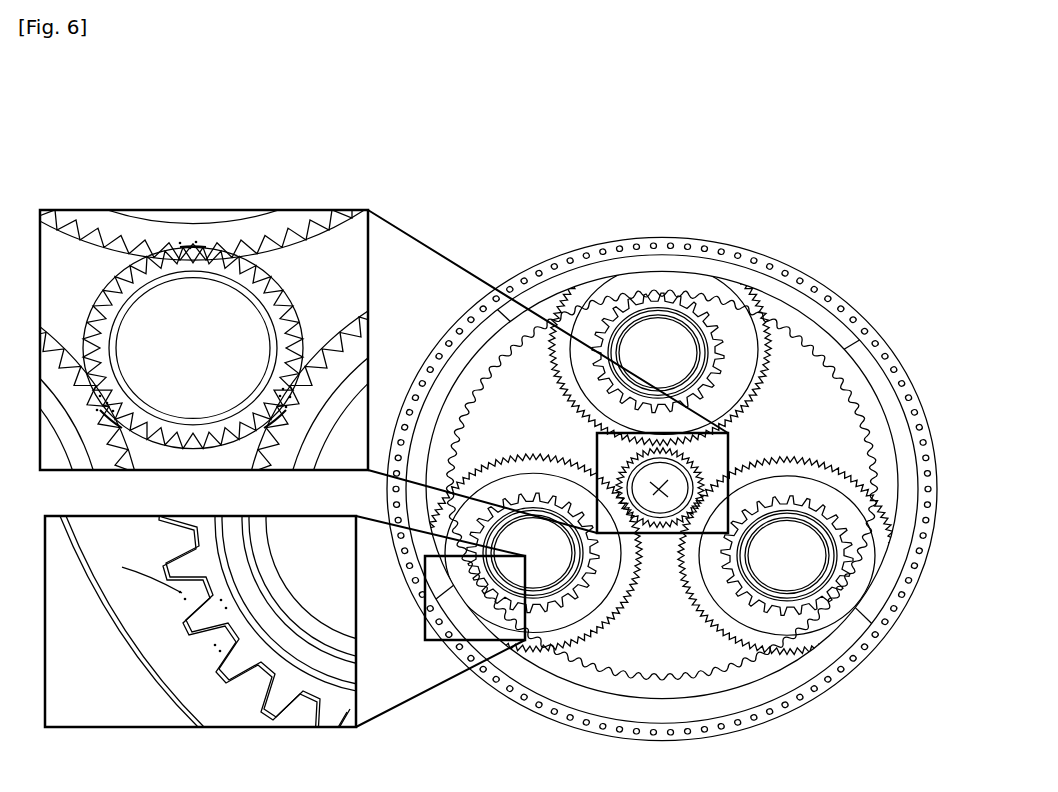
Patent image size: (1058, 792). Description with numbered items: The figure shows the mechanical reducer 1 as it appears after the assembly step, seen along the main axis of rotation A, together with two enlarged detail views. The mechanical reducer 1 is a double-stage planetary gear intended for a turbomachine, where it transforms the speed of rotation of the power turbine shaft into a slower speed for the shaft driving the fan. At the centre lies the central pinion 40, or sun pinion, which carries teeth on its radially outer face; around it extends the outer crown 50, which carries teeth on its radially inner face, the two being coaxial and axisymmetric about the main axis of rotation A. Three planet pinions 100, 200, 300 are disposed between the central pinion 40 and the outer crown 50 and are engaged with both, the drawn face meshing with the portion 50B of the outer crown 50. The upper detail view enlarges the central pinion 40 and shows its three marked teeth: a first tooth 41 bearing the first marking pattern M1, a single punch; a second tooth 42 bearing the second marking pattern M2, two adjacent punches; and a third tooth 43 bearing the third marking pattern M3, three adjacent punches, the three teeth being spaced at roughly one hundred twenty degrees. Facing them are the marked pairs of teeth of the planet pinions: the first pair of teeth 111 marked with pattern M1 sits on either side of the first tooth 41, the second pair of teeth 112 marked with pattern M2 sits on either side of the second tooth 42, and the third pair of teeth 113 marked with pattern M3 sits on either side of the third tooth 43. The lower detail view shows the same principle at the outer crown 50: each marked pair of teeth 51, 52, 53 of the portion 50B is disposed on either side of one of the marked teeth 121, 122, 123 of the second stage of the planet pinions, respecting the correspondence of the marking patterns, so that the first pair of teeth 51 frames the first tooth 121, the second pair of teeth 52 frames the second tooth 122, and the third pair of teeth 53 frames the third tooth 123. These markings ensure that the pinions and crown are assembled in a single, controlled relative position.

The mechanical reducer 1 is at (730, 152).
The central pinion 40 is at (729, 456).
The first tooth 41 is at (190, 258).
The second tooth 42 is at (117, 408).
The third tooth 43 is at (275, 392).
The outer crown 50 is at (503, 322).
The portion of the outer crown 50B is at (852, 346).
The first pair of teeth 51 is at (758, 268).
The second pair of teeth 52 is at (425, 627).
The third pair of teeth 53 is at (862, 604).
The planet pinion 100 is at (575, 394).
The planet pinion 200 is at (593, 610).
The planet pinion 300 is at (730, 610).
The first pair of teeth 111 is at (125, 238).
The second pair of teeth 112 is at (102, 405).
The third pair of teeth 113 is at (302, 405).
The first tooth 121 is at (658, 306).
The second tooth 122 is at (588, 386).
The third tooth 123 is at (752, 372).
The first marking pattern M1 is at (185, 262).
The second marking pattern M2 is at (85, 362).
The third marking pattern M3 is at (302, 358).
The main axis of rotation A is at (660, 496).